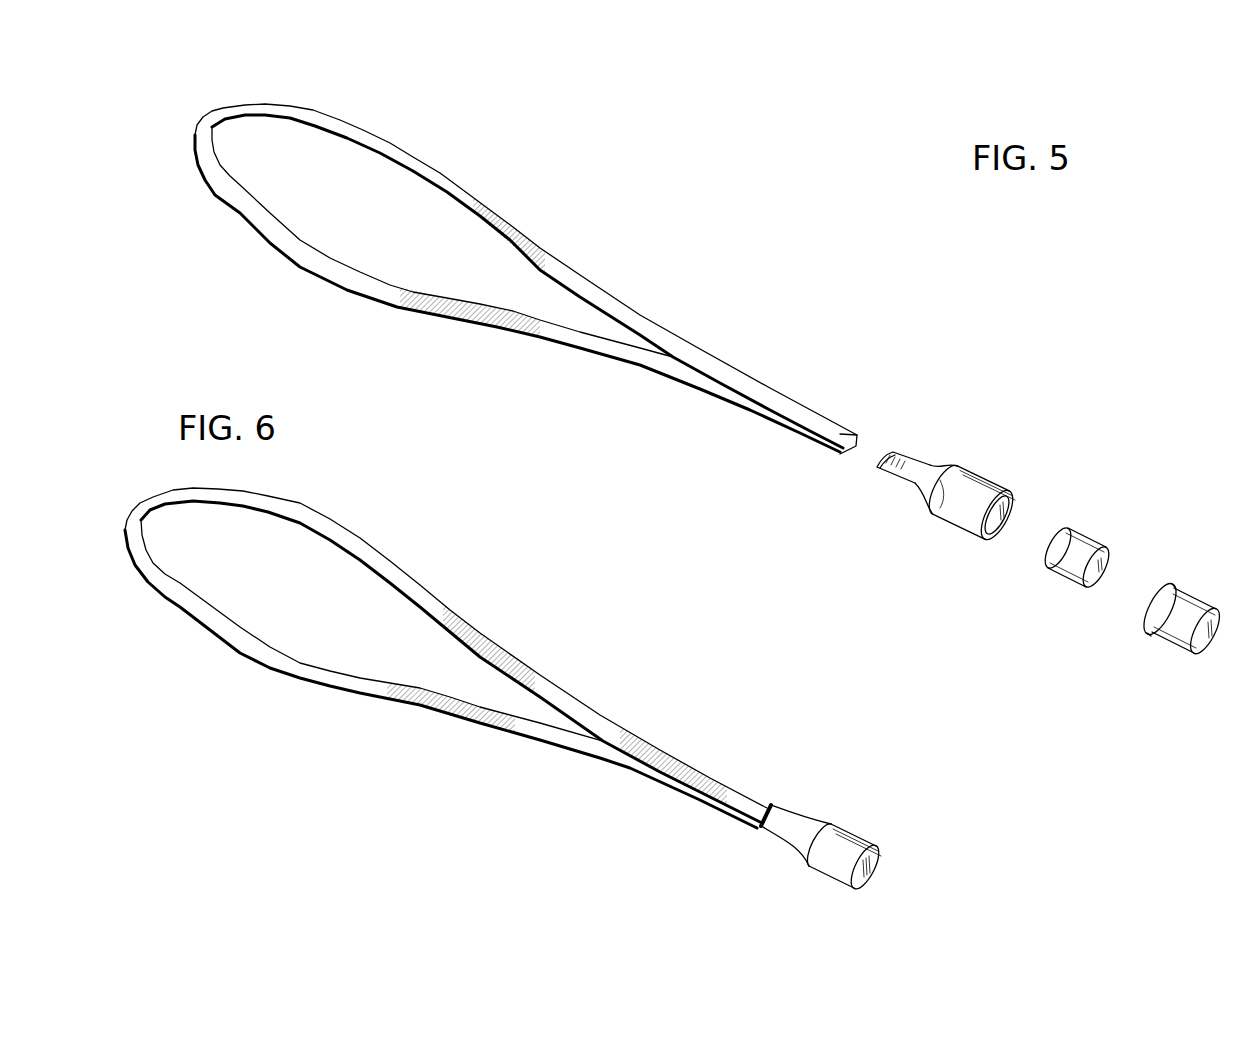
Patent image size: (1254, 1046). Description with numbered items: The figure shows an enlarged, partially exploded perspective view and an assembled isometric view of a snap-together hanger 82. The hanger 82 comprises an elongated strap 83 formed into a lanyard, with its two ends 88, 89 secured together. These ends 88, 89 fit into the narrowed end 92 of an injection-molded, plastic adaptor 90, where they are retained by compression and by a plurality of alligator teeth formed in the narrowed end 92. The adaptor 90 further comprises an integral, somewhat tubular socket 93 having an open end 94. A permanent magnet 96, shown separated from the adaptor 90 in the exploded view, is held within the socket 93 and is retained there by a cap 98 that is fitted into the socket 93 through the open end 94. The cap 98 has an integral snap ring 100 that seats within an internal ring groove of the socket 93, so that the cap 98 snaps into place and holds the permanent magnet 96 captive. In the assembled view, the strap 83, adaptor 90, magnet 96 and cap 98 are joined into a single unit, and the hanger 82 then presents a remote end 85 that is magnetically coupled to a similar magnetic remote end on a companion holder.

In FIG. 5, the hanger 82 is at (526, 286).
In FIG. 6, the hanger 82 is at (286, 693).
In FIG. 5, the elongated strap 83 is at (455, 177).
In FIG. 6, the remote end 85 is at (819, 876).
In FIG. 5, the end 88 is at (810, 440).
In FIG. 5, the end 89 is at (912, 414).
In FIG. 5, the adaptor 90 is at (977, 457).
In FIG. 5, the narrowed end 92 is at (917, 443).
In FIG. 5, the socket 93 is at (960, 508).
In FIG. 5, the open end 94 is at (1005, 522).
In FIG. 5, the permanent magnet 96 is at (1101, 529).
In FIG. 5, the cap 98 is at (1108, 588).
In FIG. 5, the snap ring 100 is at (1147, 628).